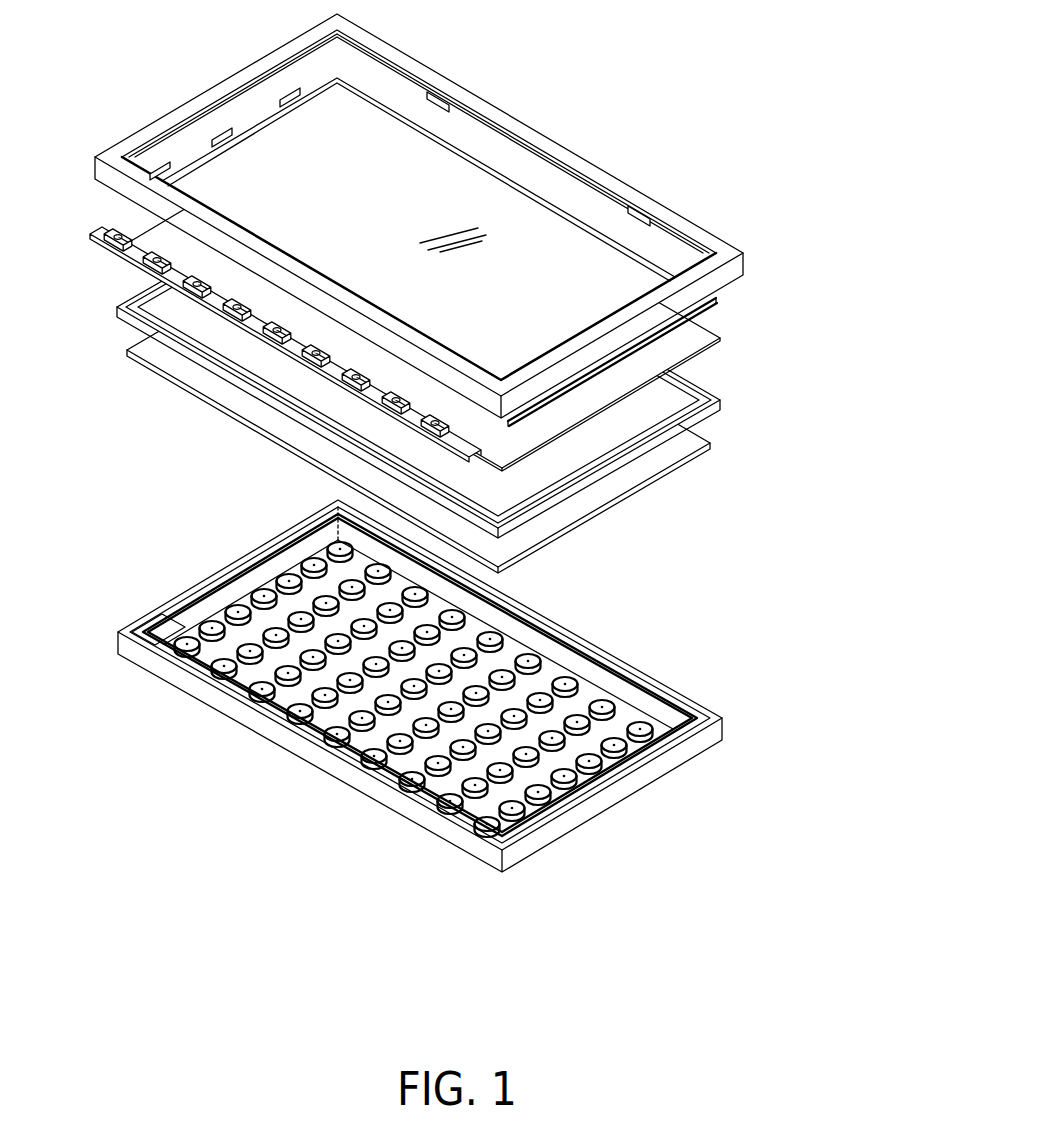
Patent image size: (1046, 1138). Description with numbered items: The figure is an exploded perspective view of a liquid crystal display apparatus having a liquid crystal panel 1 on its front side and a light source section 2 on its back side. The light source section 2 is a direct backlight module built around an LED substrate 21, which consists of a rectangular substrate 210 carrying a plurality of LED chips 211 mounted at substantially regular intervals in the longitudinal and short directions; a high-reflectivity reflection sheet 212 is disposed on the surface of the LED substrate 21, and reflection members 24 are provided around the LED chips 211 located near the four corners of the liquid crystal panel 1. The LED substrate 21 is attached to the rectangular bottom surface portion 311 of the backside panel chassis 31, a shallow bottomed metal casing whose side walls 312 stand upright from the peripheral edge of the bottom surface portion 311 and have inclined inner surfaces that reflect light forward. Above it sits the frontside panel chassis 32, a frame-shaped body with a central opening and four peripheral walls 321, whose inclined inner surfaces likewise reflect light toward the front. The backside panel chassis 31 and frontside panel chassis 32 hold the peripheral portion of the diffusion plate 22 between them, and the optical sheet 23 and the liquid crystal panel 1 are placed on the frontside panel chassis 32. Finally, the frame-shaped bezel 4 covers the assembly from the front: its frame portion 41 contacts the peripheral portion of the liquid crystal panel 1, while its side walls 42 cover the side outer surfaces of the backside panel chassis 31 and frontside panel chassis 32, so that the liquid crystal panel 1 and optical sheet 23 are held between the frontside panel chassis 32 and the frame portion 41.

The liquid crystal panel 1 is at (449, 187).
The light source section 2 is at (441, 555).
The bezel 4 is at (419, 209).
The frame portion 41 is at (705, 236).
The side walls 42 is at (203, 88).
The LED substrate 21 is at (413, 734).
The substrate 210 is at (355, 755).
The LED chips 211 is at (405, 781).
The reflection sheet 212 is at (512, 663).
The diffusion plate 22 is at (647, 480).
The optical sheet 23 is at (702, 352).
The reflection members 24 is at (333, 544).
The backside panel chassis 31 is at (432, 686).
The bottom surface portion 311 is at (235, 725).
The side walls 312 is at (230, 563).
The frontside panel chassis 32 is at (715, 418).
The peripheral walls 321 is at (700, 374).